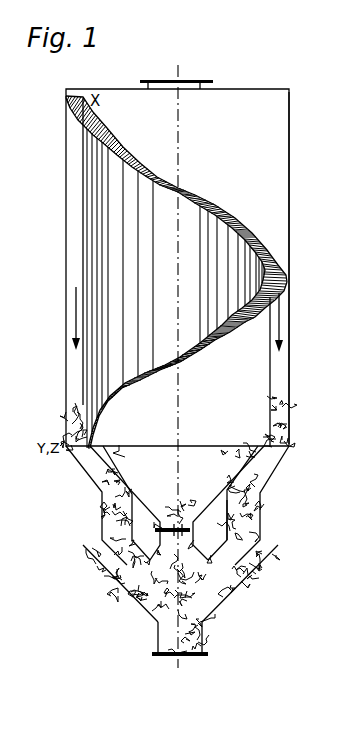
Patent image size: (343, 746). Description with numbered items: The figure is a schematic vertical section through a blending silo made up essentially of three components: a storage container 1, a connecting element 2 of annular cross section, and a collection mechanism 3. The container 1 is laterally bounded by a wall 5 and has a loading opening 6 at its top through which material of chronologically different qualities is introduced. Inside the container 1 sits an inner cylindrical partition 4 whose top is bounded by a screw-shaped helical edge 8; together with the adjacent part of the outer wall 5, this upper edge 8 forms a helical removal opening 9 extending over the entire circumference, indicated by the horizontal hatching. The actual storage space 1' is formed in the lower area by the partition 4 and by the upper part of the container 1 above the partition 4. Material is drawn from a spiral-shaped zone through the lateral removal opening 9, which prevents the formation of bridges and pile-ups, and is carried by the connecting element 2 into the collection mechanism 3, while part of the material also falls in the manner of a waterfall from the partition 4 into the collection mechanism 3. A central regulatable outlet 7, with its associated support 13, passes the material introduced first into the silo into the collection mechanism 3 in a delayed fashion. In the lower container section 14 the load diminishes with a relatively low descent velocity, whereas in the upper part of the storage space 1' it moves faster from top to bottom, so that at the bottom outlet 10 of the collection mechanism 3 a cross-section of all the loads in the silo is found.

The container 1 is at (177, 256).
The storage space 1' is at (165, 272).
The connecting element 2 is at (72, 383).
The collection mechanism 3 is at (123, 585).
The inner cylindrical partition 4 is at (240, 262).
The wall 5 is at (289, 122).
The loading opening 6 is at (200, 80).
The central regulatable outlet 7 is at (192, 532).
The helical edge 8 is at (270, 302).
The helical removal opening 9 is at (249, 220).
The bottom outlet 10 is at (158, 661).
The plate support 13 is at (156, 531).
The lower container section 14 is at (224, 466).